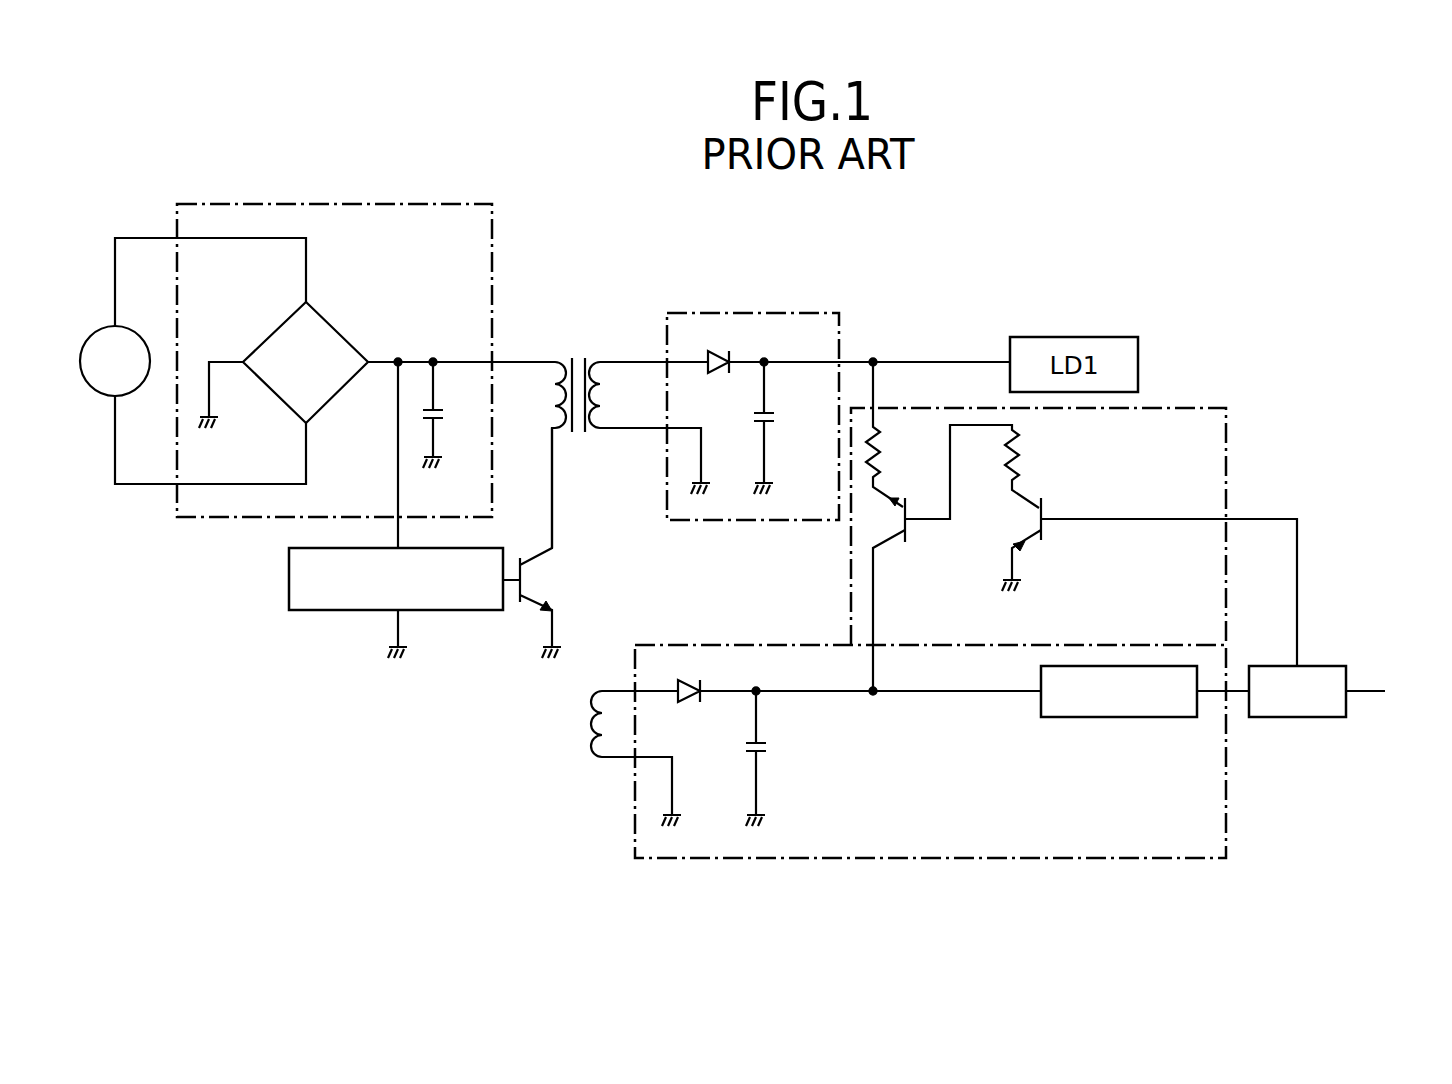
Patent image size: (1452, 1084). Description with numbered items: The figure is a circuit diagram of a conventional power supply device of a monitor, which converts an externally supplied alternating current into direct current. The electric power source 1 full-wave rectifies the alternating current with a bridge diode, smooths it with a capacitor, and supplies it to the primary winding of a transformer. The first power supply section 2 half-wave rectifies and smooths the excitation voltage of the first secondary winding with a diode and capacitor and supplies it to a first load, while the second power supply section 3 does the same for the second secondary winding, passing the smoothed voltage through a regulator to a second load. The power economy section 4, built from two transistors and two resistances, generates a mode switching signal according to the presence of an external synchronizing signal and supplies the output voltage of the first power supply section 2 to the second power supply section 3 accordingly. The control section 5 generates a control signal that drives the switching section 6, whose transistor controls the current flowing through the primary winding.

The electric power source 1 is at (420, 204).
The first power supply section 2 is at (765, 313).
The second power supply section 3 is at (1153, 858).
The power economy section 4 is at (1152, 408).
The control section 5 is at (463, 610).
The switching section 6 is at (545, 581).